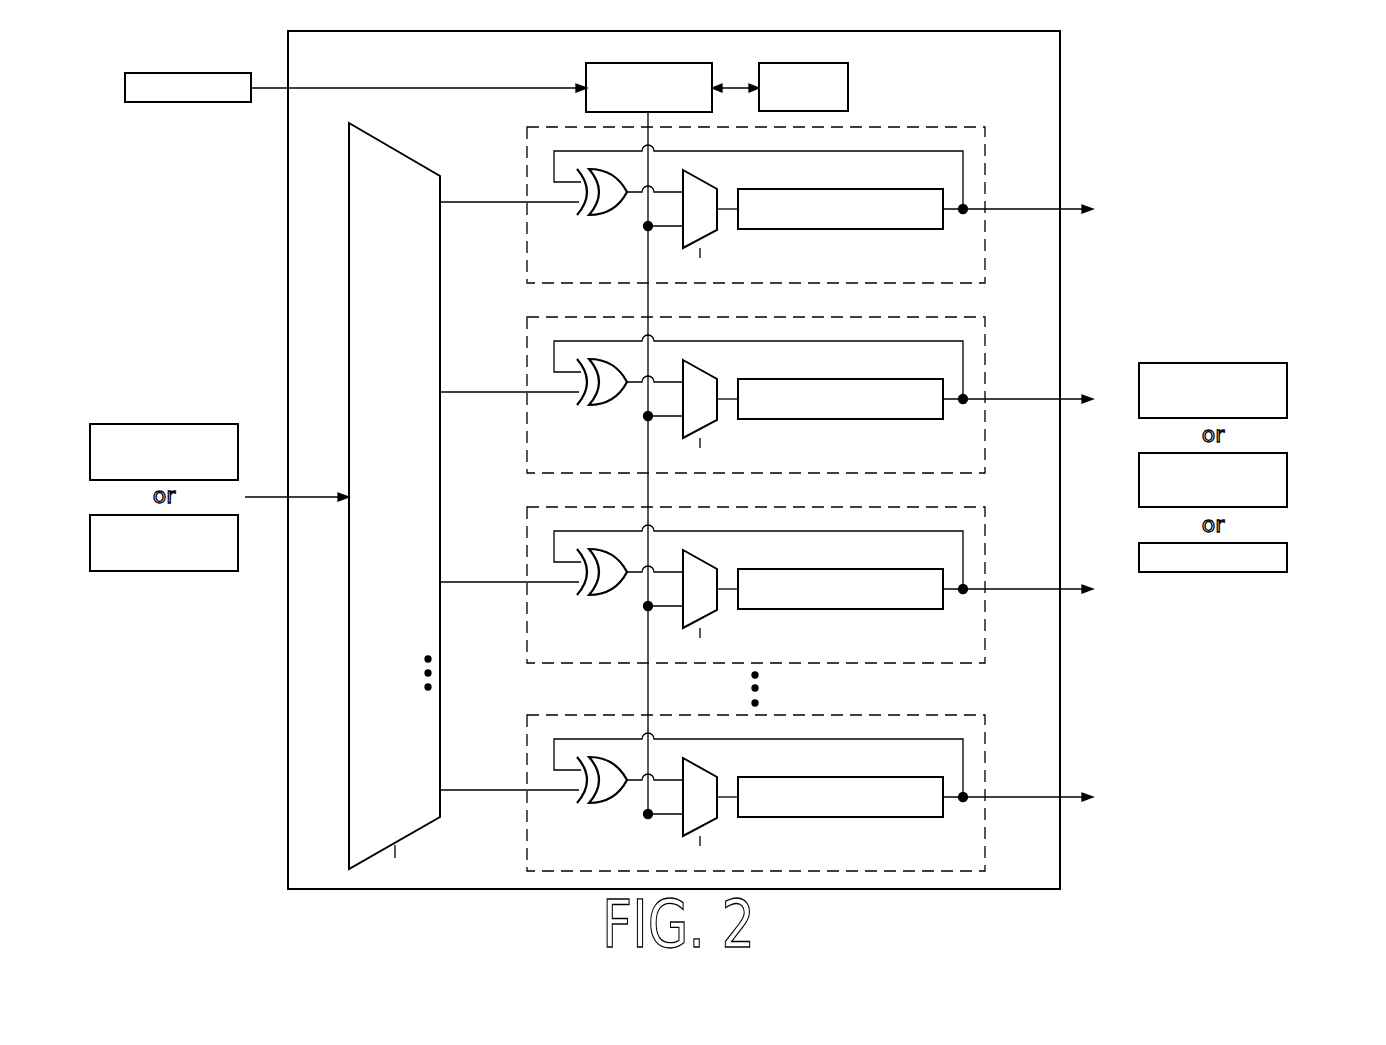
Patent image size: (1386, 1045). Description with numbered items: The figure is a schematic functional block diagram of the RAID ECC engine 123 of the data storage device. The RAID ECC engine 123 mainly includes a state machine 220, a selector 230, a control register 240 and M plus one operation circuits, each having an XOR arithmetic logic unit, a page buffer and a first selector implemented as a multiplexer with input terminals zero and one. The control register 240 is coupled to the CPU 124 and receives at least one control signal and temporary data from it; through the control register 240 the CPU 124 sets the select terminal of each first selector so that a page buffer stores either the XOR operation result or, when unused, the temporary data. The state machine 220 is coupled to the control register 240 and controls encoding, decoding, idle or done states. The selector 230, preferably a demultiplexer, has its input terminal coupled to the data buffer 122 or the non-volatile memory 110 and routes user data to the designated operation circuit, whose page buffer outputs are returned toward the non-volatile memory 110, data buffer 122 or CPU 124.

The non-volatile memory 110 is at (89, 543).
The data buffer 122 is at (89, 453).
The RAID ECC engine 123 is at (1062, 72).
The CPU 124 is at (124, 90).
The state machine 220 is at (825, 63).
The selector 230 is at (407, 155).
The control register 240 is at (673, 63).